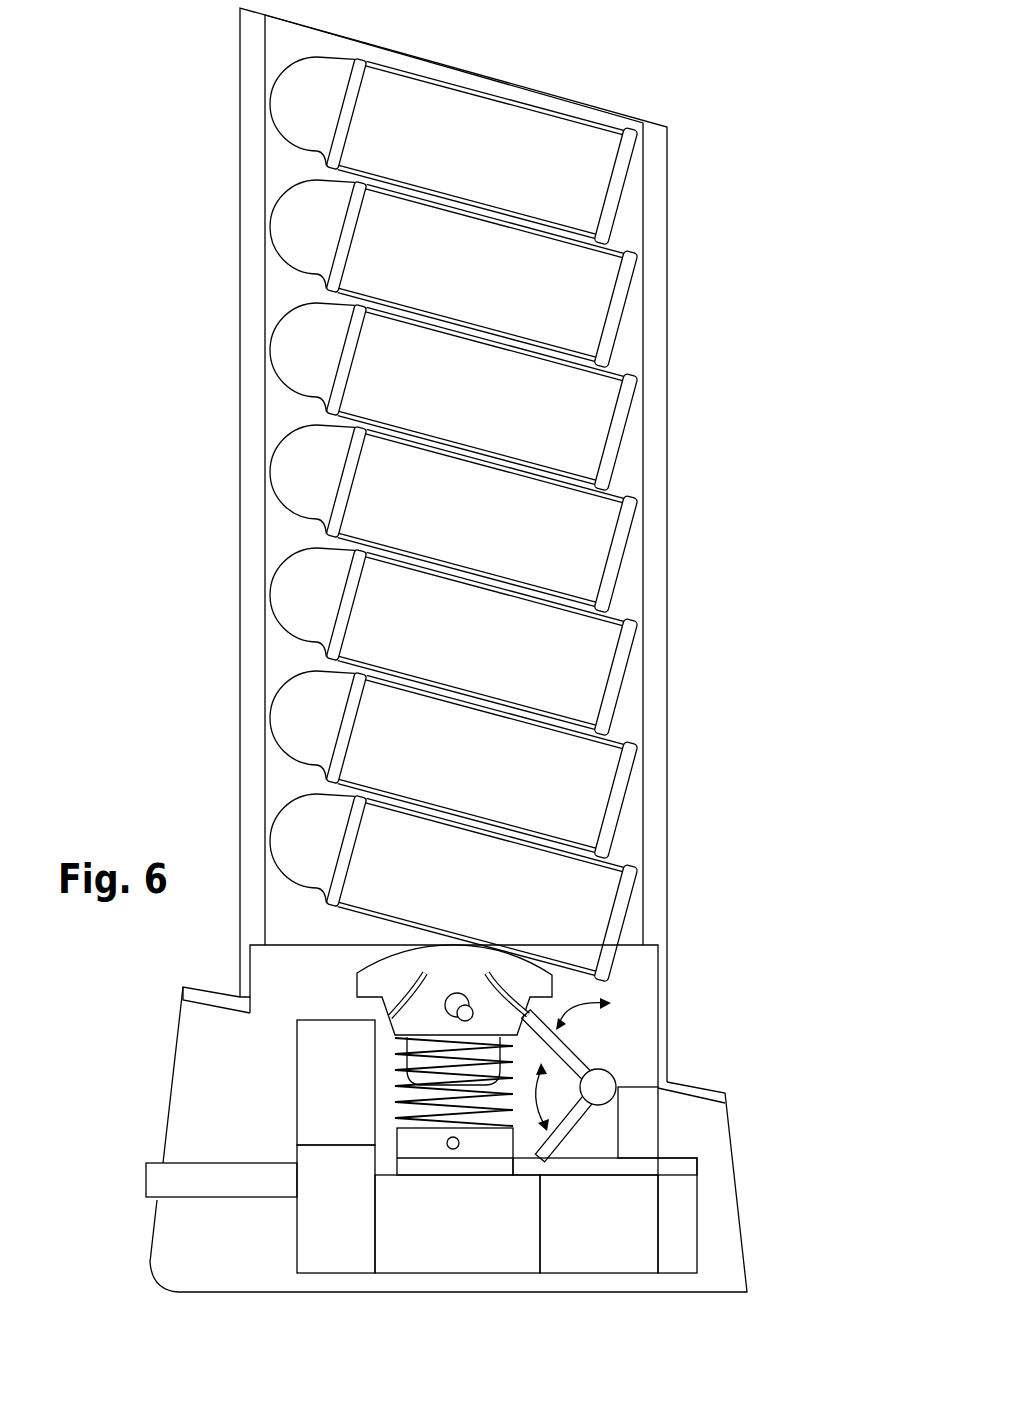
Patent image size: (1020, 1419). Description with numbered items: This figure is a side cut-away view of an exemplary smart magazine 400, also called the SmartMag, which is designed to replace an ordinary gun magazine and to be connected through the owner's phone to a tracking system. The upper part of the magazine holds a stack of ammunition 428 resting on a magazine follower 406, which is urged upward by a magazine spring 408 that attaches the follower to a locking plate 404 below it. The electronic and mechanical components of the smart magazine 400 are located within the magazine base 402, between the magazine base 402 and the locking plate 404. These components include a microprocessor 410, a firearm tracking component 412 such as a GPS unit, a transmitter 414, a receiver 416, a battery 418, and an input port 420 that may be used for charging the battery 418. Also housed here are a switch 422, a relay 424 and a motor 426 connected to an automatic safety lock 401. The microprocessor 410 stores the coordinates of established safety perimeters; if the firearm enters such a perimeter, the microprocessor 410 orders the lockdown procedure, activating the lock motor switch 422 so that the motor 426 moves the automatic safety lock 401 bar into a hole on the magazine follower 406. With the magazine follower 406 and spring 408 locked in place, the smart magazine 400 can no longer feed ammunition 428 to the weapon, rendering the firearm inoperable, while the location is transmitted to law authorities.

The smart magazine 400 is at (712, 139).
The automatic safety lock 401 is at (567, 1052).
The magazine base 402 is at (237, 1250).
The locking plate 404 is at (482, 1142).
The magazine follower 406 is at (502, 965).
The magazine spring 408 is at (400, 1090).
The microprocessor 410 is at (316, 1103).
The firearm tracking component 412 is at (680, 1223).
The transmitter 414 is at (434, 1235).
The receiver 416 is at (583, 1238).
The battery 418 is at (316, 1231).
The input port 420 is at (210, 1181).
The switch 422 is at (637, 1167).
The relay 424 is at (470, 1163).
The motor 426 is at (643, 1115).
The ammunition 428 is at (570, 422).